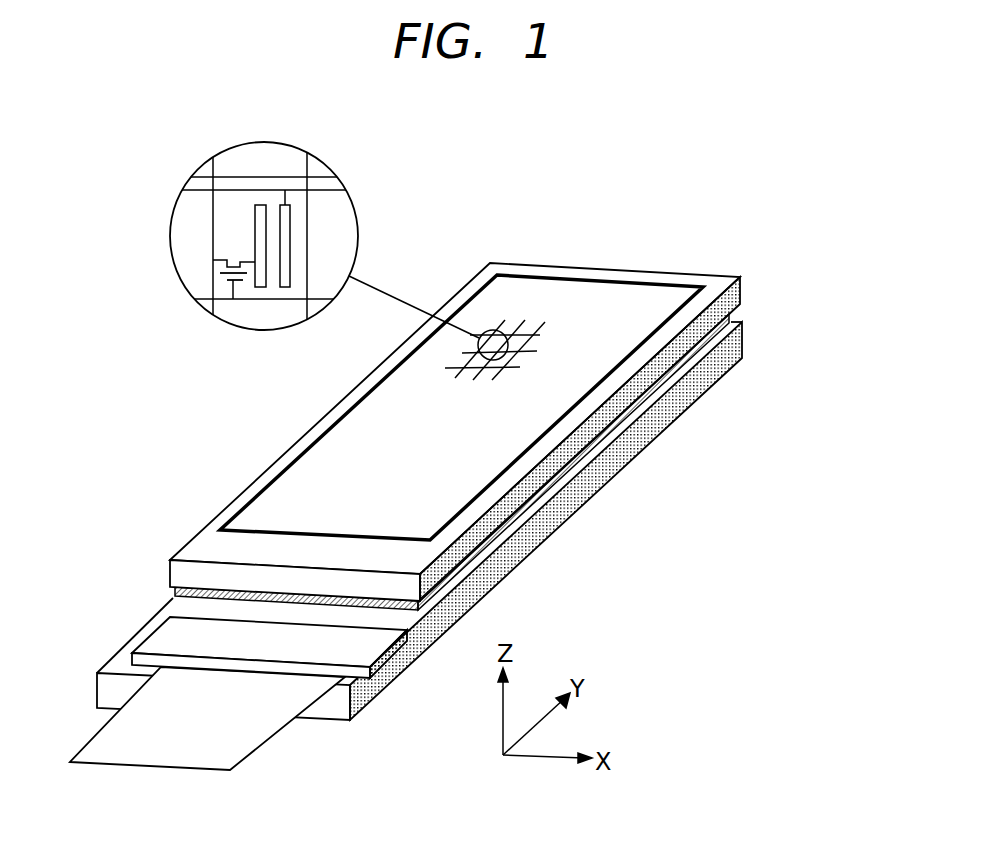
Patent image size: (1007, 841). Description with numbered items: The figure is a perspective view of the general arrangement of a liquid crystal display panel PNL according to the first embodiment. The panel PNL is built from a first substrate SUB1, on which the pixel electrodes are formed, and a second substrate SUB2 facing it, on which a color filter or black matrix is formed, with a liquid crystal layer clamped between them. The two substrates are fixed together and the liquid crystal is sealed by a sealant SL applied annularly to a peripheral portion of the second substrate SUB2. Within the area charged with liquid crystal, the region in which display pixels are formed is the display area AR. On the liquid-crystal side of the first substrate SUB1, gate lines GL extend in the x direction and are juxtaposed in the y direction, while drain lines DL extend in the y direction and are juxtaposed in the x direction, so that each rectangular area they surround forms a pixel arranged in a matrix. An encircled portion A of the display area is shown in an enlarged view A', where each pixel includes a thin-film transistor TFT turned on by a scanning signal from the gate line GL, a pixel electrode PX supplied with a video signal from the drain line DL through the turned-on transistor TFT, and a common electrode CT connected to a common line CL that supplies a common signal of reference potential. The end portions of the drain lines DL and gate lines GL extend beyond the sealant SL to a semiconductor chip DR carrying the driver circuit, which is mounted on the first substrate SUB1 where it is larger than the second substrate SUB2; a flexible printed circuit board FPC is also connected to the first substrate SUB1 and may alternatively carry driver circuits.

The liquid crystal display panel PNL is at (462, 469).
The first substrate SUB1 is at (688, 395).
The second substrate SUB2 is at (720, 282).
The sealant SL is at (563, 482).
The display area AR is at (603, 293).
The drain line DL is at (507, 318).
The gate line GL is at (508, 372).
The common line CL is at (252, 190).
The pixel electrode PX is at (255, 213).
The common electrode CT is at (285, 287).
The thin-film transistor TFT is at (222, 275).
The semiconductor chip DR is at (160, 635).
The flexible printed circuit board FPC is at (262, 730).
The portion A is at (476, 346).
The enlarged view A' is at (324, 228).